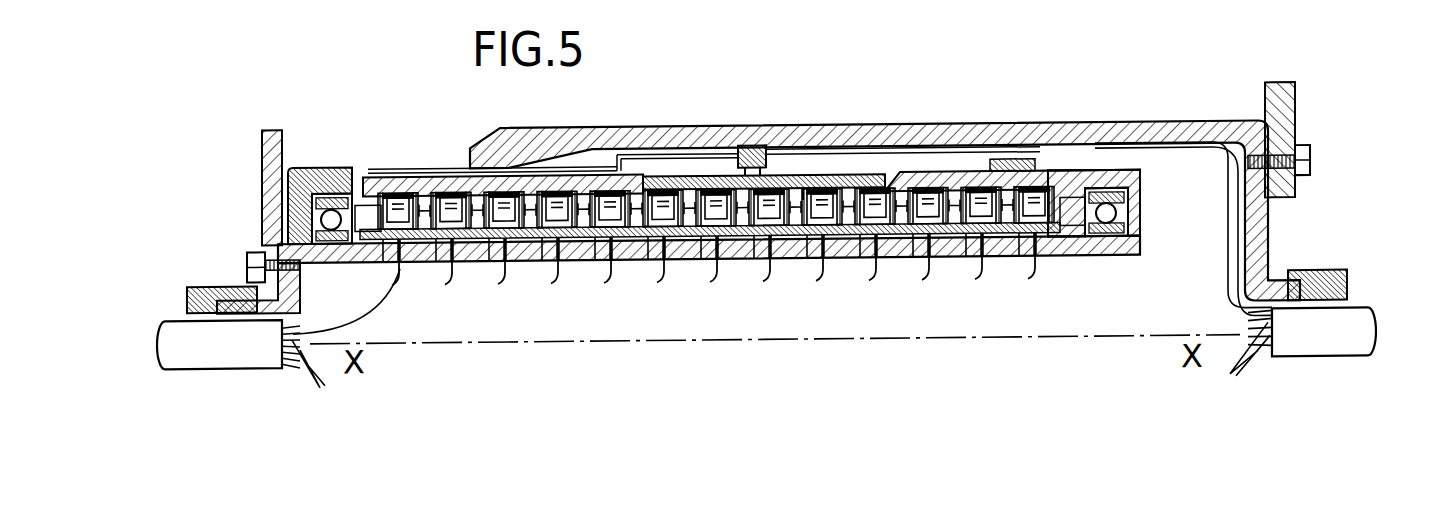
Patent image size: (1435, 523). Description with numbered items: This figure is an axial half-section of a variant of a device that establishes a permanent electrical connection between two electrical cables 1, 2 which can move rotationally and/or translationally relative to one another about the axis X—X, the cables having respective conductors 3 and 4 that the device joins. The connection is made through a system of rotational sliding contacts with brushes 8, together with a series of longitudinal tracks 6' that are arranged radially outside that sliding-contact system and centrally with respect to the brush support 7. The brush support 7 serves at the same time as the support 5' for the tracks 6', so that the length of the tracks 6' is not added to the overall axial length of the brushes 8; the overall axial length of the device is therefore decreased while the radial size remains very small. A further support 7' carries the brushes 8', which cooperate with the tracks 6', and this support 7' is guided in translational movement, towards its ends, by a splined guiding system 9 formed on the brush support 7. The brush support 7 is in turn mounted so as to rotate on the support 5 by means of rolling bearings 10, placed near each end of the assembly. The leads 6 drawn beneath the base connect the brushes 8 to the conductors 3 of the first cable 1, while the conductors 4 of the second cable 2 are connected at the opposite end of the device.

The electrical cable 1 is at (225, 340).
The electrical cable 2 is at (1330, 338).
The conductors 3 is at (293, 334).
The conductors 4 is at (1250, 324).
The support 5 is at (709, 285).
The support for the tracks 5' is at (1094, 203).
The connecting leads 6 is at (731, 272).
The longitudinal tracks 6' is at (764, 135).
The brush support 7 is at (1128, 155).
The support 7' is at (885, 186).
The brushes 8 is at (726, 169).
The brushes 8' is at (739, 125).
The splined guiding system 9 is at (423, 176).
The rolling bearings 10 is at (297, 233).